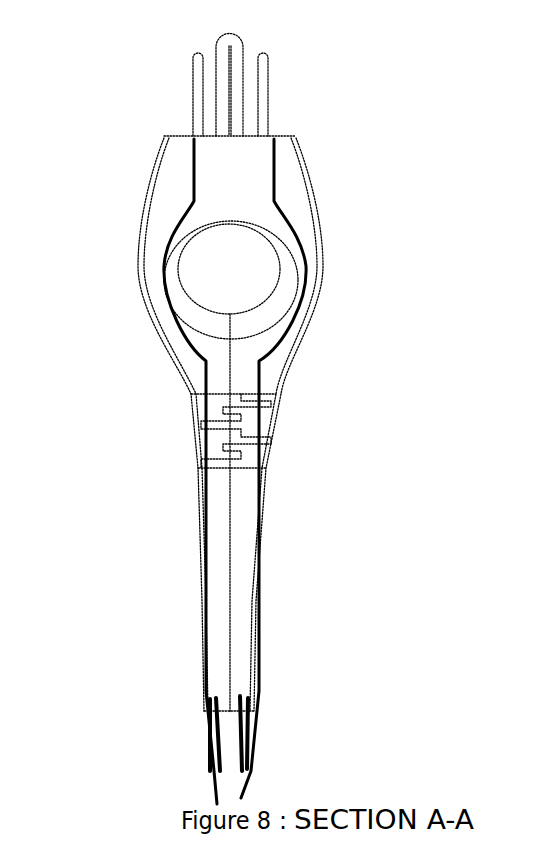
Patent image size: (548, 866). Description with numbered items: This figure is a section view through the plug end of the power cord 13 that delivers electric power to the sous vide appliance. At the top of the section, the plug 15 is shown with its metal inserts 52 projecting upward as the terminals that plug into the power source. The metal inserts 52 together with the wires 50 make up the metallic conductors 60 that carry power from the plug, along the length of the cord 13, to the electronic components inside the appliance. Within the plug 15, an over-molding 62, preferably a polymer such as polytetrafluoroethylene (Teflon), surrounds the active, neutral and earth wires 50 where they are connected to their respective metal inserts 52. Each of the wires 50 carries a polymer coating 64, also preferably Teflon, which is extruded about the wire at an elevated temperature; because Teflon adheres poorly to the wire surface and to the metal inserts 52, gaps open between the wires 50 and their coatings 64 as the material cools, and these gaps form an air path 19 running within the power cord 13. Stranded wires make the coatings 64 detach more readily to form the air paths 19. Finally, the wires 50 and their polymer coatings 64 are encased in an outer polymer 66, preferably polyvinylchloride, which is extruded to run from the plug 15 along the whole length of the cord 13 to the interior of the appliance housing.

The power cord 13 is at (255, 510).
The plug 15 is at (138, 263).
The air path 19 is at (207, 753).
The wires 50 is at (191, 178).
The metal inserts 52 is at (263, 52).
The metallic conductors 60 is at (323, 117).
The over-molding 62 is at (153, 323).
The polymer coating 64 is at (207, 720).
The outer polymer 66 is at (240, 567).